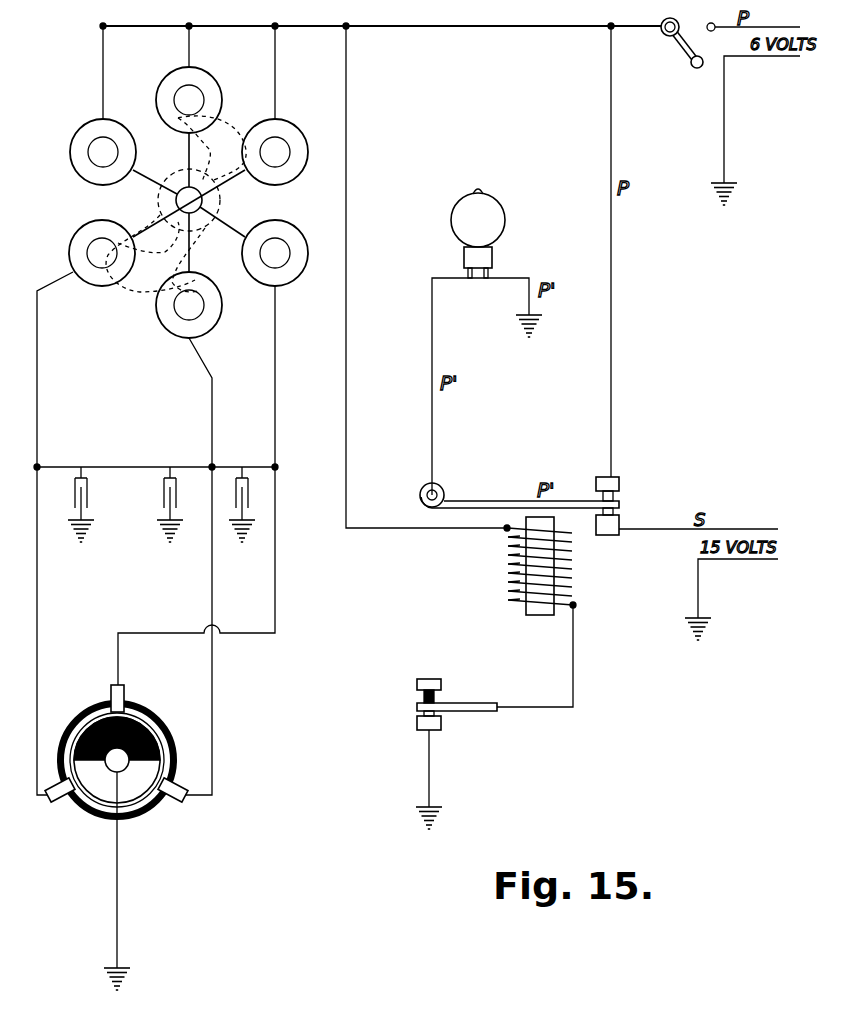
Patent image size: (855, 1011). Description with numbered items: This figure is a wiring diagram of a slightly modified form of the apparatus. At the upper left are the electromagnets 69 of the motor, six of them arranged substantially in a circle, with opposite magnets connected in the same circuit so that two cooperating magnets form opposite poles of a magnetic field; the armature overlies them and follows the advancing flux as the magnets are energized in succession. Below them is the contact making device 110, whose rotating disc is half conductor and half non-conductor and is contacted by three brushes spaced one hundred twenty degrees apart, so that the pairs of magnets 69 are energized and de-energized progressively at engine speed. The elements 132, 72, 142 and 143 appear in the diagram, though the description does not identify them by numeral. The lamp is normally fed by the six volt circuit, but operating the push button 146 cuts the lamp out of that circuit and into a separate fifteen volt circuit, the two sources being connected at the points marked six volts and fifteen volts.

The electromagnets 69 is at (72, 242).
The spark plugs 132 is at (163, 482).
The contact making device 110 is at (163, 707).
The vacuum tube lamp 72 is at (512, 198).
The vibrator armature 142 is at (494, 496).
The magnet coil 143 is at (566, 583).
The push button 146 is at (440, 683).